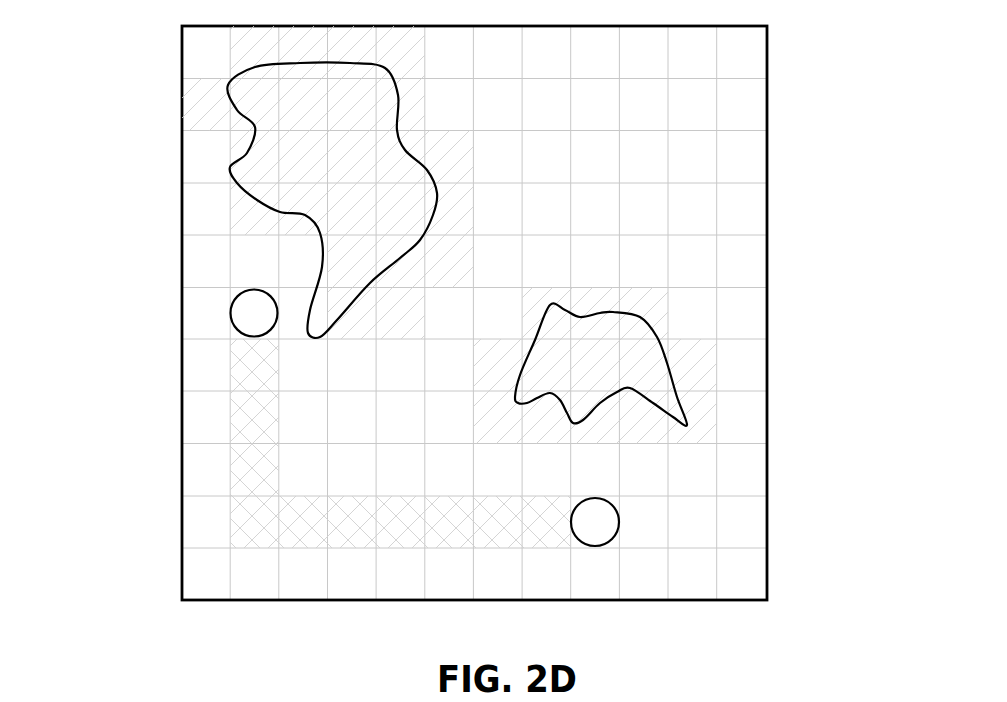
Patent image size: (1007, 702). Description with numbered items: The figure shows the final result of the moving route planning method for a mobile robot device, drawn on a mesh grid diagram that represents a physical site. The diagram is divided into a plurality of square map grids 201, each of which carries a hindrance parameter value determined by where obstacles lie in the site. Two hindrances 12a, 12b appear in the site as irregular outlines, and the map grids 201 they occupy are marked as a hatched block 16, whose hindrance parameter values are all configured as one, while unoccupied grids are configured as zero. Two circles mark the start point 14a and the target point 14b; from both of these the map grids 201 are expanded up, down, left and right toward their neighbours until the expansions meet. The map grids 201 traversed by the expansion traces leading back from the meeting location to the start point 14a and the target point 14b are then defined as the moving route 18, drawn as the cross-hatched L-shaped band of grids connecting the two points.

The map grid 201 is at (197, 60).
The block labeled with hatched lines 16 is at (202, 103).
The hindrance 12a is at (247, 167).
The hindrance 12b is at (648, 373).
The moving route 18 is at (230, 477).
The start point 14a is at (602, 525).
The target point 14b is at (253, 318).